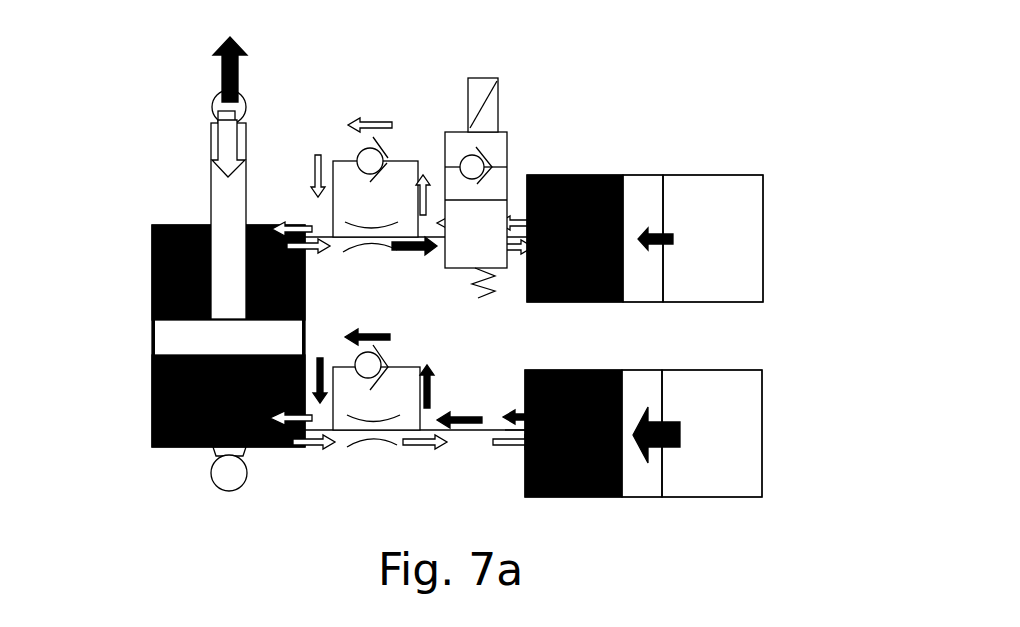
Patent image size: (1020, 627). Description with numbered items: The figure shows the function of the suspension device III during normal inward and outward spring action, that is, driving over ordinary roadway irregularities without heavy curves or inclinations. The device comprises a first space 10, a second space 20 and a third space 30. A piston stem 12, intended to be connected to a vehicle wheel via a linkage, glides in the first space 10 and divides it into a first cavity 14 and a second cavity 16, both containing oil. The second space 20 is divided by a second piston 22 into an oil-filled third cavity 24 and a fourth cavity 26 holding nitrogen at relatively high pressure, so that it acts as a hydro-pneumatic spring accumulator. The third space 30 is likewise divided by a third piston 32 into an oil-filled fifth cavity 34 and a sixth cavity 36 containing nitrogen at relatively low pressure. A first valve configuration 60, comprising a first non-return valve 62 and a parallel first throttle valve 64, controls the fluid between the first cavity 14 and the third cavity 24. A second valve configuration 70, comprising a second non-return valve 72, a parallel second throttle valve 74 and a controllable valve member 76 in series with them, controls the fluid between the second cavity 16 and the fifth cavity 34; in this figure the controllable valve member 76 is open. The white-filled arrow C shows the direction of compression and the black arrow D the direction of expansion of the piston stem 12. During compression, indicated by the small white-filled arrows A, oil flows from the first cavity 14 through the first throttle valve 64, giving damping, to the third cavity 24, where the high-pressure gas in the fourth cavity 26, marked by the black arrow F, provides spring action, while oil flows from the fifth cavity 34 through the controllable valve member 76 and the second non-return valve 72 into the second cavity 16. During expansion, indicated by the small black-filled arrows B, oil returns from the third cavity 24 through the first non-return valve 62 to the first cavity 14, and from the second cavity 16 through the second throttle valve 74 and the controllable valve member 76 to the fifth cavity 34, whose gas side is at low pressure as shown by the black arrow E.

The first space 10 is at (180, 296).
The piston stem 12 is at (206, 191).
The first cavity 14 is at (152, 383).
The second cavity 16 is at (152, 272).
The second space 20 is at (702, 460).
The second piston 22 is at (652, 465).
The third cavity 24 is at (590, 493).
The fourth cavity 26 is at (720, 457).
The third space 30 is at (703, 195).
The third piston 32 is at (642, 197).
The fifth cavity 34 is at (596, 176).
The sixth cavity 36 is at (713, 195).
The first valve configuration 60 is at (407, 434).
The first non-return valve 62 is at (388, 385).
The first throttle valve 64 is at (372, 452).
The second valve configuration 70 is at (347, 133).
The second non-return valve 72 is at (372, 140).
The second throttle valve 74 is at (362, 210).
The controllable valve member 76 is at (515, 166).
The small white-filled arrows A is at (325, 447).
The small black-filled arrows B is at (520, 437).
The white-filled arrow C is at (215, 127).
The black arrow D is at (218, 53).
The black arrow E is at (663, 250).
The black arrow F is at (670, 422).
The suspension device III is at (136, 499).